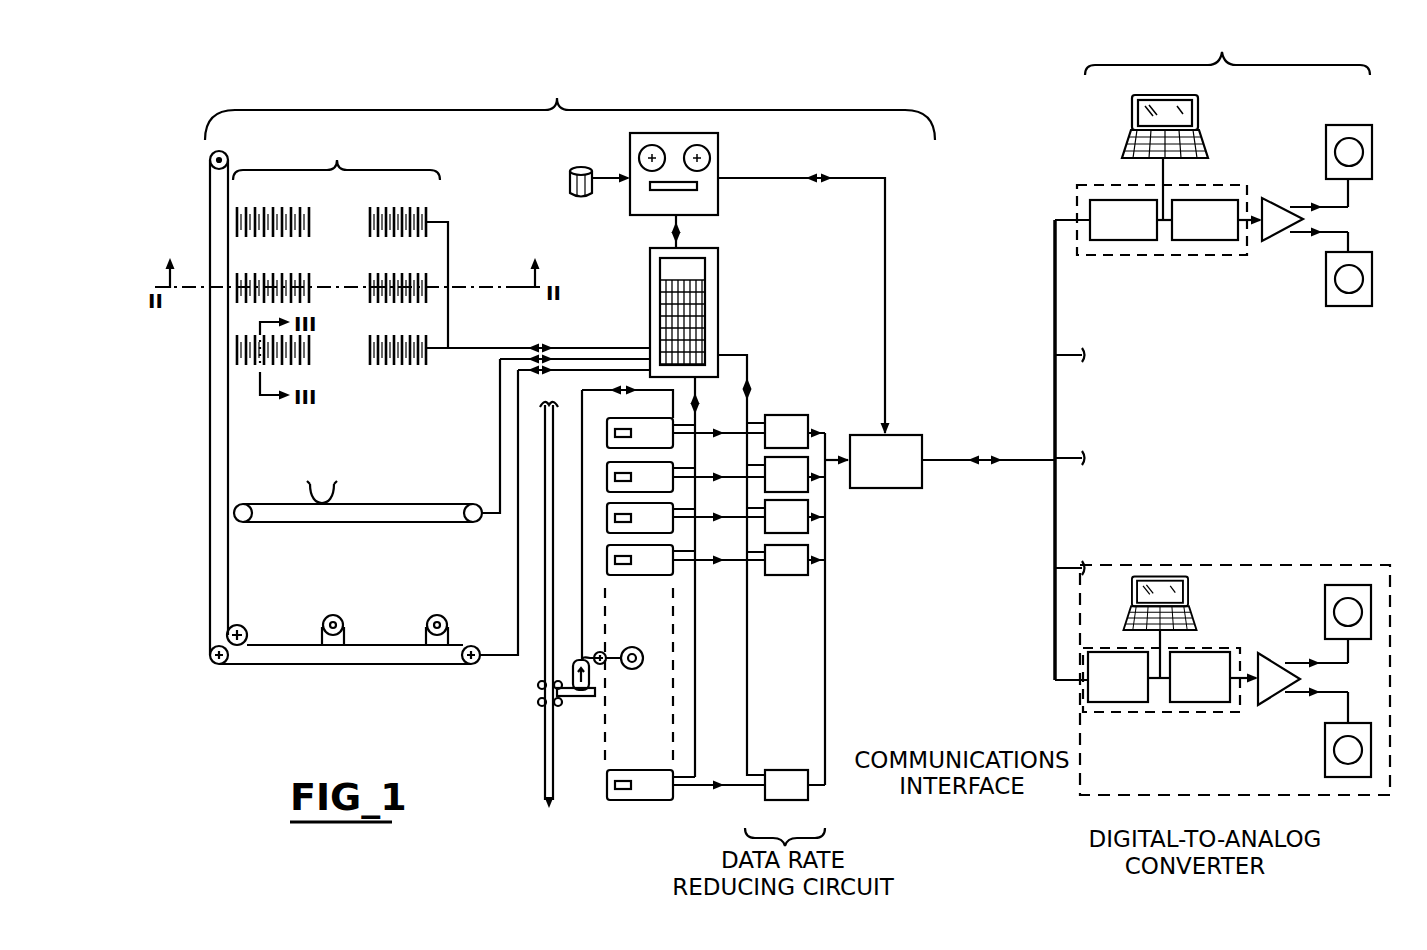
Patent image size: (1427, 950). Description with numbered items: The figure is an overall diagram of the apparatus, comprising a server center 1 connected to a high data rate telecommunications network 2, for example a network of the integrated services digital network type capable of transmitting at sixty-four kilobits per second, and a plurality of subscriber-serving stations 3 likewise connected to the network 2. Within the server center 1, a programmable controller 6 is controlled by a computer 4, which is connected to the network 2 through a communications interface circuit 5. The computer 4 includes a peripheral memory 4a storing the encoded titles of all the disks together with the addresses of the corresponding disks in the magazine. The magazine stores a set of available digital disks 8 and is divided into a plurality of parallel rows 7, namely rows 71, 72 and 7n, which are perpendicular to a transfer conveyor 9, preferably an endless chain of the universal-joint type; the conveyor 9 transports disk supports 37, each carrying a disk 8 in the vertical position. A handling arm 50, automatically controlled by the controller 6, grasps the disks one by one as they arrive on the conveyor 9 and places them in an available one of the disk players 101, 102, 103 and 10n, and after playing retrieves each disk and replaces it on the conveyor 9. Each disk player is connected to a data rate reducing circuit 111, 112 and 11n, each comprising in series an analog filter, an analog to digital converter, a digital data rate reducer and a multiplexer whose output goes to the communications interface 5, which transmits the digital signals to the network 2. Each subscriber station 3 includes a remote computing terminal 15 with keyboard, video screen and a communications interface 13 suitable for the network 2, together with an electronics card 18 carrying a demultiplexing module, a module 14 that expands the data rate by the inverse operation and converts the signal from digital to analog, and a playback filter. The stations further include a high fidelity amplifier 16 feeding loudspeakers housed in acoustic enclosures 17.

The server center 1 is at (570, 100).
The high data rate telecommunications network 2 is at (1022, 458).
The subscriber-serving station 3 is at (1227, 45).
The computer 4 is at (678, 138).
The peripheral memory 4a is at (568, 175).
The communications interface circuit 5 is at (915, 489).
The programmable controller 6 is at (712, 273).
The rows of disks of the magazine 7 is at (365, 248).
The first row of disks 71 is at (428, 215).
The second row of disks 72 is at (428, 284).
The n-th row of disks 7n is at (428, 348).
The digital disk 8 is at (240, 213).
The transfer conveyor 9 is at (210, 562).
The first disk player 101 is at (686, 435).
The second disk player 102 is at (686, 479).
The third disk player 103 is at (686, 520).
The n-th disk player 10n is at (650, 800).
The first data rate reducing circuit 111 is at (783, 427).
The second data rate reducing circuit 112 is at (800, 483).
The n-th data rate reducing circuit 11n is at (808, 796).
The communications interface 13 is at (1118, 242).
The data rate expanding module and digital to analog converter 14 is at (1200, 242).
The remote computing terminal 15 is at (1210, 133).
The high fidelity amplifier 16 is at (1275, 242).
The loudspeakers housed in acoustic enclosures 17 is at (1366, 190).
The electronics card 18 is at (1077, 200).
The disk support 37 is at (340, 495).
The handling arm 50 is at (578, 700).